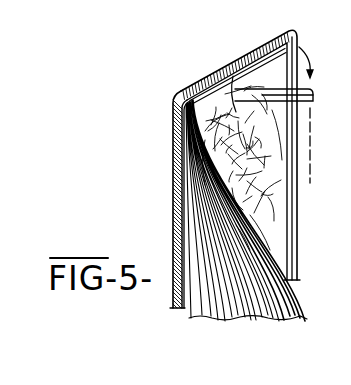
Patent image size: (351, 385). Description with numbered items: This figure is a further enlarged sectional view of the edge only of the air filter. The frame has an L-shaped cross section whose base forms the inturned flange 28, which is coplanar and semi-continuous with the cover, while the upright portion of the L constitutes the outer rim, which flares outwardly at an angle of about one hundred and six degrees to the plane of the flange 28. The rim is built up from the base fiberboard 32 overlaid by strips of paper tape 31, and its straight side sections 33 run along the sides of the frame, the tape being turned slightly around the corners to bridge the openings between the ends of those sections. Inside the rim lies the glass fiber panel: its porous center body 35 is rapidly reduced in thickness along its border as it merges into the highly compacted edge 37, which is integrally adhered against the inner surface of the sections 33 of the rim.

The inturned flange 28 is at (169, 186).
The paper tape 31 is at (212, 78).
The base fiberboard 32 is at (186, 139).
The straight side sections 33 is at (242, 55).
The porous center body 35 is at (257, 272).
The highly compacted edge 37 is at (243, 163).